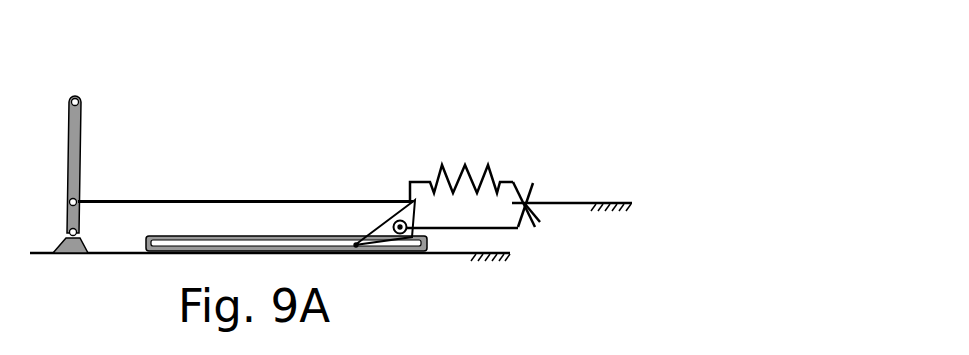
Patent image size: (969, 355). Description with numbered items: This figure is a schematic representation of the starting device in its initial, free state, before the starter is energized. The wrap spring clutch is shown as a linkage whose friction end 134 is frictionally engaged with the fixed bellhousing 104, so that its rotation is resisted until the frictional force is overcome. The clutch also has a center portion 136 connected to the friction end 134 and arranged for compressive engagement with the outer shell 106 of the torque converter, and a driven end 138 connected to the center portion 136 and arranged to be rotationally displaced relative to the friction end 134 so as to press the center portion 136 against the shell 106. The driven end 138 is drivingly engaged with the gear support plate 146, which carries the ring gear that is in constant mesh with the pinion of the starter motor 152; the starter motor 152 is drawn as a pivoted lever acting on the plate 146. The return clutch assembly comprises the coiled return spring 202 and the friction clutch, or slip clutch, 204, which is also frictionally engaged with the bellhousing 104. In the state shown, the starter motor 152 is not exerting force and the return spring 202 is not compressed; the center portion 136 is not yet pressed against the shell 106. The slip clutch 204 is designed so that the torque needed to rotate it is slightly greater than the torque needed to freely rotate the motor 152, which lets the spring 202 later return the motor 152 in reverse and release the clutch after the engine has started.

The bellhousing 104 is at (577, 202).
The outer shell 106 is at (383, 255).
The friction end 134 is at (545, 228).
The center portion 136 is at (390, 205).
The driven end 138 is at (413, 190).
The gear support plate 146 is at (223, 199).
The starter motor 152 is at (81, 143).
The coiled return spring 202 is at (484, 165).
The friction clutch 204 is at (538, 188).